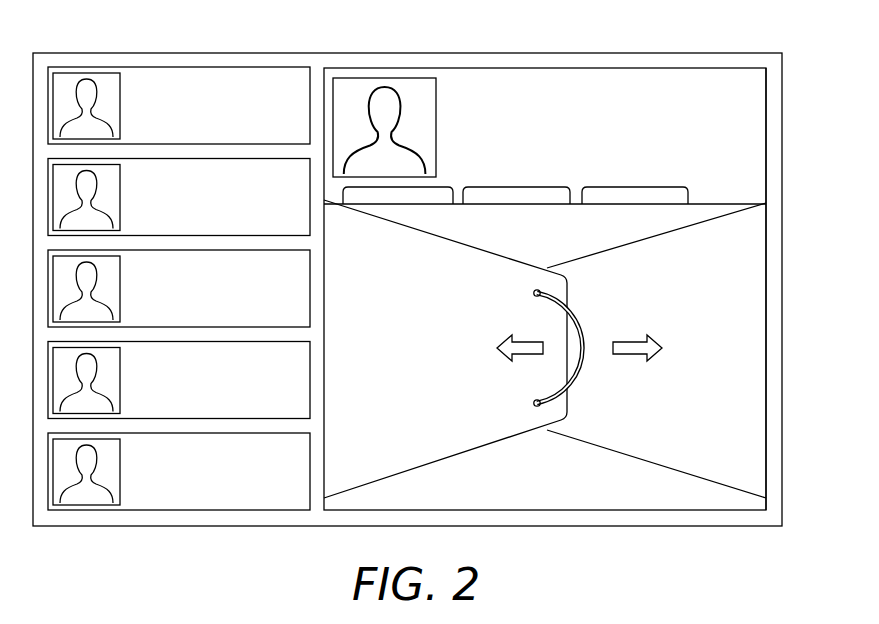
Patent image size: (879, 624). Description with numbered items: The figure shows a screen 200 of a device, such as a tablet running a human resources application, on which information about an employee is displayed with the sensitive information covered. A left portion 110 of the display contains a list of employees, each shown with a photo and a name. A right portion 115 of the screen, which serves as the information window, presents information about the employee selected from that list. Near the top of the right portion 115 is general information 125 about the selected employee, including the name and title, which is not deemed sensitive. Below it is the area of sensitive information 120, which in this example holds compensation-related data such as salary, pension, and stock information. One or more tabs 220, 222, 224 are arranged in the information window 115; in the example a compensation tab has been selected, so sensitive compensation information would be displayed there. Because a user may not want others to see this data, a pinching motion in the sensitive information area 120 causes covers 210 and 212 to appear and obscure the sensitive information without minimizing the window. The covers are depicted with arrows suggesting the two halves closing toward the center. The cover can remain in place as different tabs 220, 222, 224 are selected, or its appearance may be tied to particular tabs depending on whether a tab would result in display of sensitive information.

The screen 200 is at (407, 53).
The left portion 110 is at (178, 65).
The right portion 115 is at (612, 67).
The general information 125 is at (768, 128).
The sensitive information 120 is at (768, 290).
The tab 220 is at (382, 198).
The tab 222 is at (520, 198).
The tab 224 is at (597, 198).
The cover 212 is at (527, 337).
The cover 210 is at (632, 338).